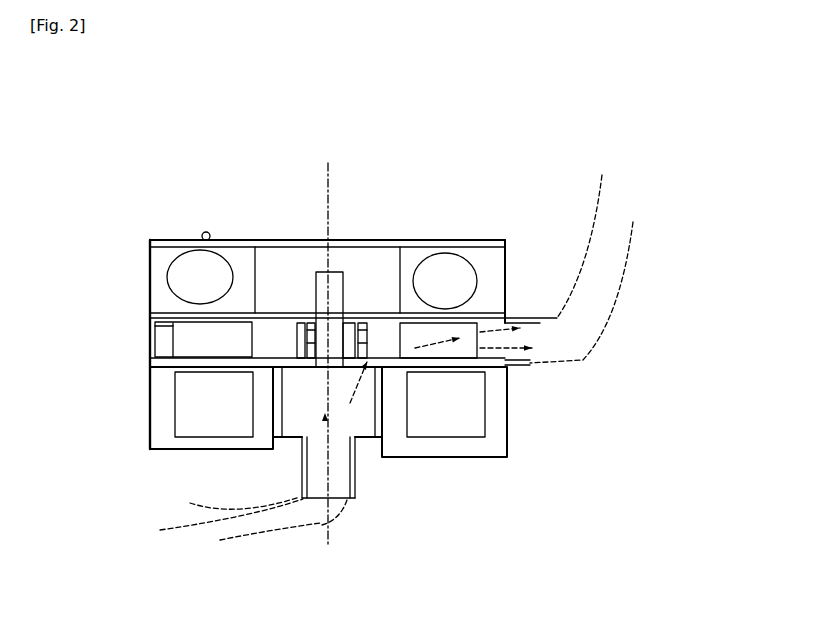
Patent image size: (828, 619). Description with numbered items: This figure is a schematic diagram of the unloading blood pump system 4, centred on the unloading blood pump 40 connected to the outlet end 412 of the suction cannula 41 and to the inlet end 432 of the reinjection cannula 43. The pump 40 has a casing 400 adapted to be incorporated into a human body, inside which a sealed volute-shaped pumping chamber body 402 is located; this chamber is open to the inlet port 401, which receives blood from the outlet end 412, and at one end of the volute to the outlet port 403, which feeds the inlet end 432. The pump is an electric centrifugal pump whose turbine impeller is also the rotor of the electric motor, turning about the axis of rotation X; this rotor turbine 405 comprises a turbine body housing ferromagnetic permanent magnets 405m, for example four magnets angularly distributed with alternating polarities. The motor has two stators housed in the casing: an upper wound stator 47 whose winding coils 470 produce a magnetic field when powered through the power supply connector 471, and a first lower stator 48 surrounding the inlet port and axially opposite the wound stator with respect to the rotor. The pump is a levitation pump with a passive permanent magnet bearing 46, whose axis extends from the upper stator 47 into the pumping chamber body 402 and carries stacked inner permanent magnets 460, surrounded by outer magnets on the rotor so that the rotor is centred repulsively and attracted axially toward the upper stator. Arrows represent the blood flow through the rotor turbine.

The unloading blood pump system 4 is at (605, 523).
The unloading blood pump 40 is at (132, 278).
The wound stator 47 is at (148, 253).
The winding coils 470 is at (203, 272).
The power supply connector 471 is at (207, 231).
The axis of rotation X is at (327, 210).
The inner permanent magnets 460 is at (315, 271).
The passive permanent magnet bearing 46 is at (350, 313).
The rotor turbine 405 is at (388, 333).
The ferromagnetic permanent magnets 405m is at (156, 339).
The pumping chamber body 402 is at (276, 372).
The casing 400 is at (505, 431).
The lower stator 48 is at (455, 425).
The outlet end 412 is at (357, 468).
The suction cannula 41 is at (322, 524).
The inlet port 401 is at (633, 323).
The inlet end 432 is at (522, 317).
The outlet port 403 is at (522, 362).
The reinjection cannula 43 is at (610, 272).